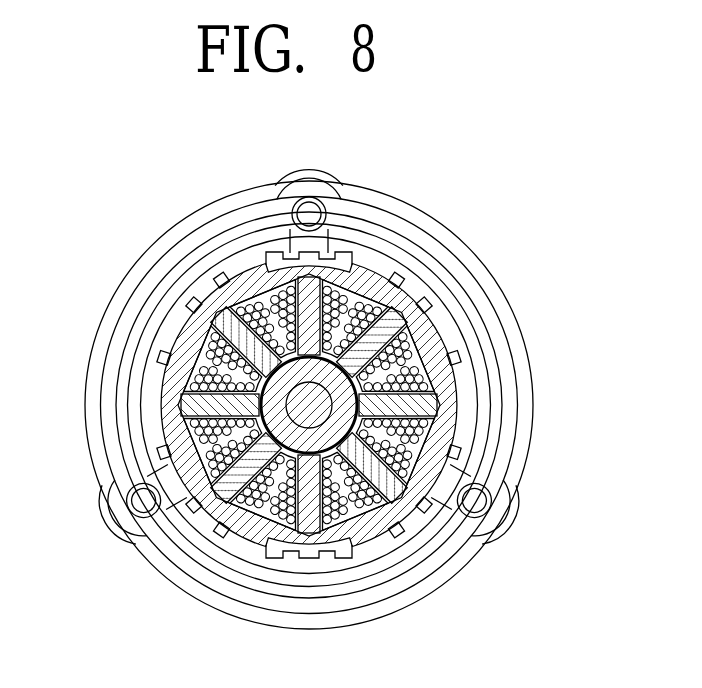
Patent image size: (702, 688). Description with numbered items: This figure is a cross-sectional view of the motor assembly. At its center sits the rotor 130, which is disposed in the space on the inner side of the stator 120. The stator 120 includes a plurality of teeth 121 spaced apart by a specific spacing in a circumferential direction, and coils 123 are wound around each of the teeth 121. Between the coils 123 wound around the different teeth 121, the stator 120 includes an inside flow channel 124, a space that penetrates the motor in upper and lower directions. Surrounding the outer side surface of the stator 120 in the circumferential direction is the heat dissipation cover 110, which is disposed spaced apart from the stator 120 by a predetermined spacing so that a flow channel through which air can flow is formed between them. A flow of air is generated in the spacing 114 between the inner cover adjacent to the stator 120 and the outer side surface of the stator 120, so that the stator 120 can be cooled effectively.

The heat dissipation cover 110 is at (118, 305).
The spacing 114 is at (402, 272).
The stator 120 is at (146, 385).
The teeth 121 is at (494, 488).
The coils 123 is at (445, 423).
The inside flow channel 124 is at (420, 410).
The rotor 130 is at (312, 408).